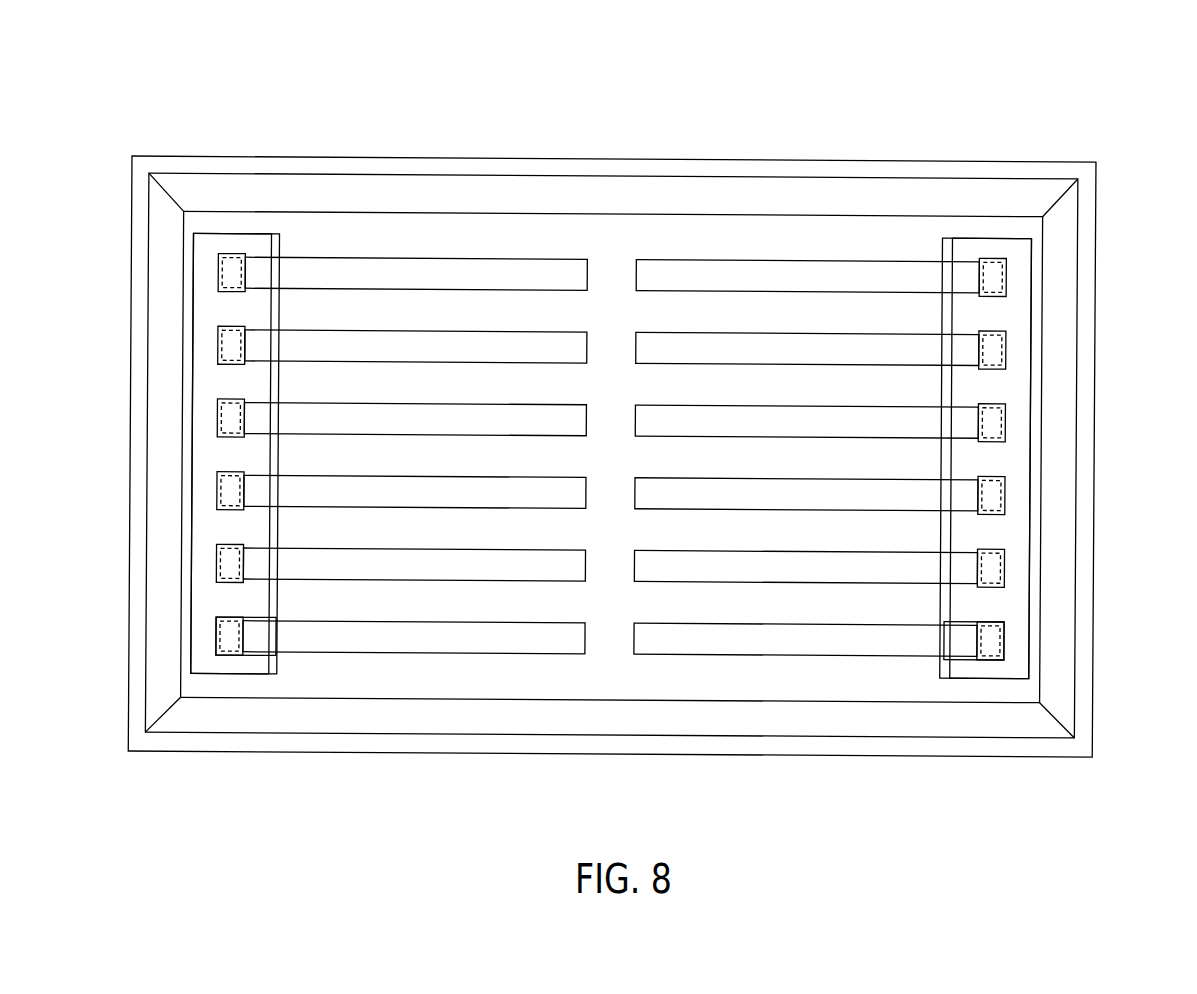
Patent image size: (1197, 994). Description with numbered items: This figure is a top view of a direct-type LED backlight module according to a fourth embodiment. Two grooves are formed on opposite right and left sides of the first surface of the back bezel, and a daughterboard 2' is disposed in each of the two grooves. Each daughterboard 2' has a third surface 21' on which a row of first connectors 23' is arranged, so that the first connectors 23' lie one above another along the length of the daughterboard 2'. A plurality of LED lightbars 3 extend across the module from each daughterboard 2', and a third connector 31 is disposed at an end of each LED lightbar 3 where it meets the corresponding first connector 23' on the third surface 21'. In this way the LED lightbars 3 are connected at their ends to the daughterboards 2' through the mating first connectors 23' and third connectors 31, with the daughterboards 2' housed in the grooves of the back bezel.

The daughterboard 2' is at (611, 536).
The third surface 21' is at (611, 536).
The first connector 23' is at (614, 547).
The LED lightbar 3 is at (260, 637).
The third connector 31 is at (230, 633).